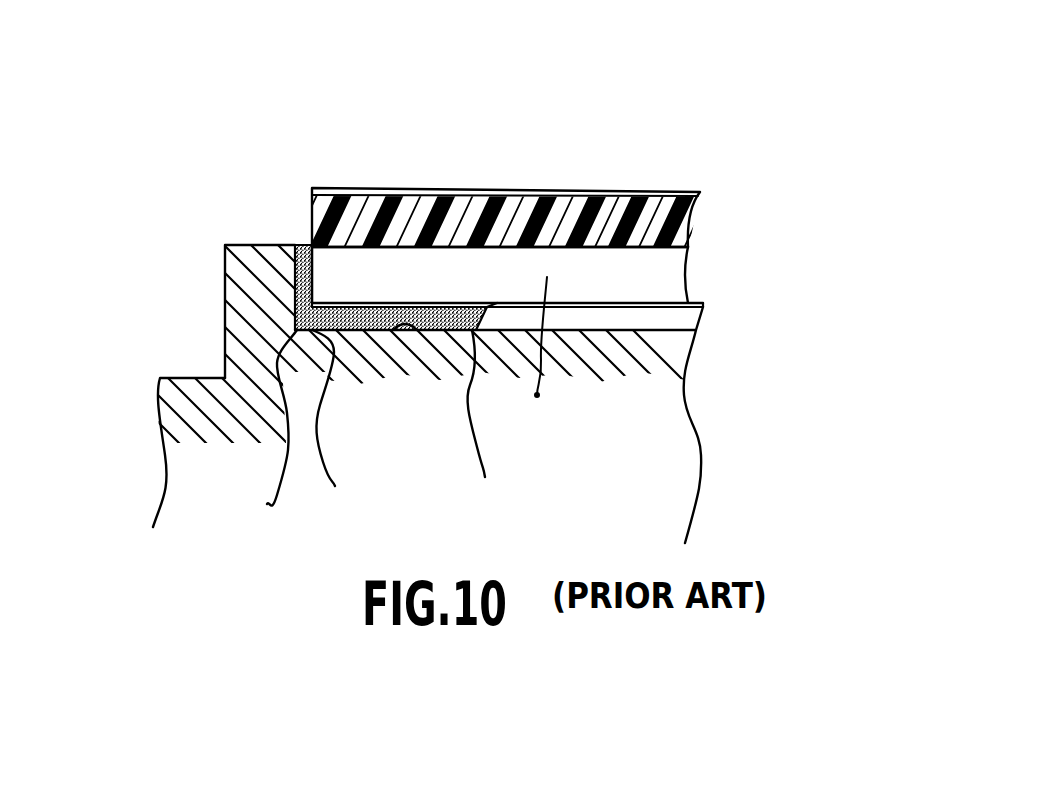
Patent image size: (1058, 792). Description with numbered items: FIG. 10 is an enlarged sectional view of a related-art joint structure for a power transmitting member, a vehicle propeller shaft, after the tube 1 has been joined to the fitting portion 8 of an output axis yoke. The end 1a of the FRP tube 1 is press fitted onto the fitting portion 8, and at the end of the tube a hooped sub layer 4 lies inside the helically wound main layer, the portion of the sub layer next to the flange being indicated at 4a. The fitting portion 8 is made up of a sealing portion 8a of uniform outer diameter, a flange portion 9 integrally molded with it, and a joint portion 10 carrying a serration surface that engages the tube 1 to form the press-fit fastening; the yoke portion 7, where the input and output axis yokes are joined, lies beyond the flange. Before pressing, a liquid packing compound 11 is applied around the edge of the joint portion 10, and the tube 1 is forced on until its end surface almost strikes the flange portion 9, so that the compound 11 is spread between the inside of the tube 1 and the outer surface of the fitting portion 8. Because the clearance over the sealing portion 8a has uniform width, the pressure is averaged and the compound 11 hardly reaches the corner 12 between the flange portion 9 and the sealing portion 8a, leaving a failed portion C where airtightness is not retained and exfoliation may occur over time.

The tube 1 is at (524, 186).
The end of the tube 1a is at (374, 228).
The sub layer 4 is at (683, 286).
The adhesive fillet 4a is at (310, 270).
The yoke portion 7 is at (186, 403).
The fitting portion 8 is at (658, 488).
The sealing portion 8a is at (408, 326).
The flange portion 9 is at (226, 253).
The joint portion 10 is at (583, 322).
The liquid packing compound 11 is at (489, 422).
The corner 12 is at (339, 425).
The failed portion C is at (279, 432).